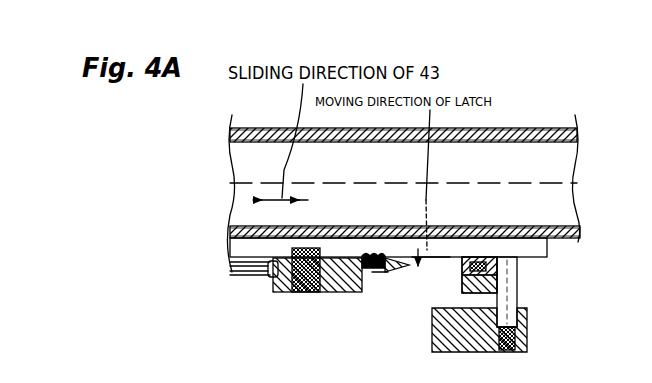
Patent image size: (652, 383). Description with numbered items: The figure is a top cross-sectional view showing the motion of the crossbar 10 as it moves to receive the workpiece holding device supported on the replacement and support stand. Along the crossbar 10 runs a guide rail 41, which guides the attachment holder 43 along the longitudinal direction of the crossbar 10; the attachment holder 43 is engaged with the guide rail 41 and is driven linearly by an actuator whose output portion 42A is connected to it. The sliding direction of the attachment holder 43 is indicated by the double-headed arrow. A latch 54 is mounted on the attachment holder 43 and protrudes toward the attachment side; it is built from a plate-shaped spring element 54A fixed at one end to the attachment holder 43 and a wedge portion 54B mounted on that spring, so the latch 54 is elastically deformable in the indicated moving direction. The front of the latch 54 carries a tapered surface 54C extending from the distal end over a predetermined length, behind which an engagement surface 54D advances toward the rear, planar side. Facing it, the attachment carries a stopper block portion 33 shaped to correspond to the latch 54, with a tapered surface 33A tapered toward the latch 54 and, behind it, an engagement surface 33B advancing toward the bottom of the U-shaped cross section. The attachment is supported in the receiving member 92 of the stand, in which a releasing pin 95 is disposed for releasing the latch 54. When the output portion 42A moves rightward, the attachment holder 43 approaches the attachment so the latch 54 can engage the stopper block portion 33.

The crossbar 10 is at (504, 128).
The stopper block portion 33 is at (487, 228).
The tapered surface 33A is at (466, 256).
The engagement surface 33B is at (493, 256).
The guide rail 41 is at (549, 250).
The output portion 42A is at (235, 281).
The attachment holder 43 is at (325, 296).
The latch 54 is at (413, 270).
The plate-shaped spring element 54A is at (348, 252).
The wedge portion 54B is at (398, 252).
The tapered surface 54C is at (402, 278).
The engagement surface 54D is at (380, 278).
The receiving member 92 is at (529, 330).
The releasing pin 95 is at (519, 282).